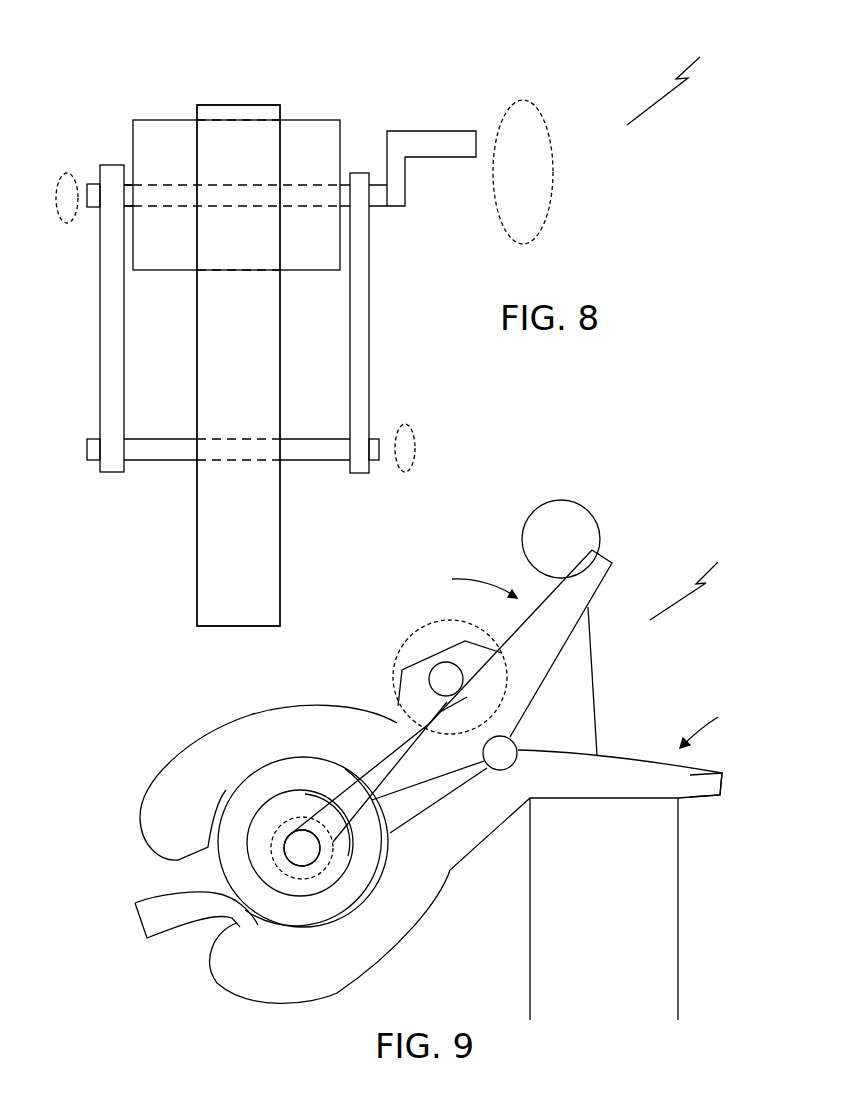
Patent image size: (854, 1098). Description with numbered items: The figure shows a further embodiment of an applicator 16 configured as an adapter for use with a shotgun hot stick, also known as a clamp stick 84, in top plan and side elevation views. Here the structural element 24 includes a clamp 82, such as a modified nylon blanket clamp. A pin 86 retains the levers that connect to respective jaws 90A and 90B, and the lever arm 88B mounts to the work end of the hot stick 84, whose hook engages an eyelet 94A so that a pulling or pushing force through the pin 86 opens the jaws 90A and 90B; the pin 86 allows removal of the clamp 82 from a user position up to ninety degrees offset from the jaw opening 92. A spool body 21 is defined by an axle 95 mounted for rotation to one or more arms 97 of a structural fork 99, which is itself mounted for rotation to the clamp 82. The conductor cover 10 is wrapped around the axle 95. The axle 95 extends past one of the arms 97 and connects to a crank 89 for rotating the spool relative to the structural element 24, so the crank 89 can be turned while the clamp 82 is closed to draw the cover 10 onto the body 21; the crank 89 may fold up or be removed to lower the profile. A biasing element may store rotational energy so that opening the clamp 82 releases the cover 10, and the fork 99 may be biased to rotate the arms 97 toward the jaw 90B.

In FIG. 8, the conductor cover 10 is at (172, 120).
In FIG. 9, the conductor cover 10 is at (248, 808).
In FIG. 8, the applicator 16 is at (678, 84).
In FIG. 9, the applicator 16 is at (699, 579).
In FIG. 8, the spool body 21 is at (313, 207).
In FIG. 9, the spool body 21 is at (303, 861).
In FIG. 8, the structural element 24 is at (217, 528).
In FIG. 9, the structural element 24 is at (471, 579).
In FIG. 8, the clamp 82 is at (217, 528).
In FIG. 9, the clamp 82 is at (535, 678).
In FIG. 9, the hot stick 84 is at (623, 893).
In FIG. 9, the pin 86 is at (596, 667).
In FIG. 9, the lever arm 88B is at (688, 782).
In FIG. 8, the crank 89 is at (423, 131).
In FIG. 9, the jaw 90A is at (233, 737).
In FIG. 9, the jaw 90B is at (253, 975).
In FIG. 9, the jaw opening 92 is at (482, 843).
In FIG. 9, the eyelet 94A is at (566, 499).
In FIG. 8, the axle 95 is at (313, 207).
In FIG. 9, the axle 95 is at (303, 861).
In FIG. 8, the arms 97 is at (110, 416).
In FIG. 9, the arms 97 is at (400, 728).
In FIG. 8, the structural fork 99 is at (310, 455).
In FIG. 9, the structural fork 99 is at (443, 667).